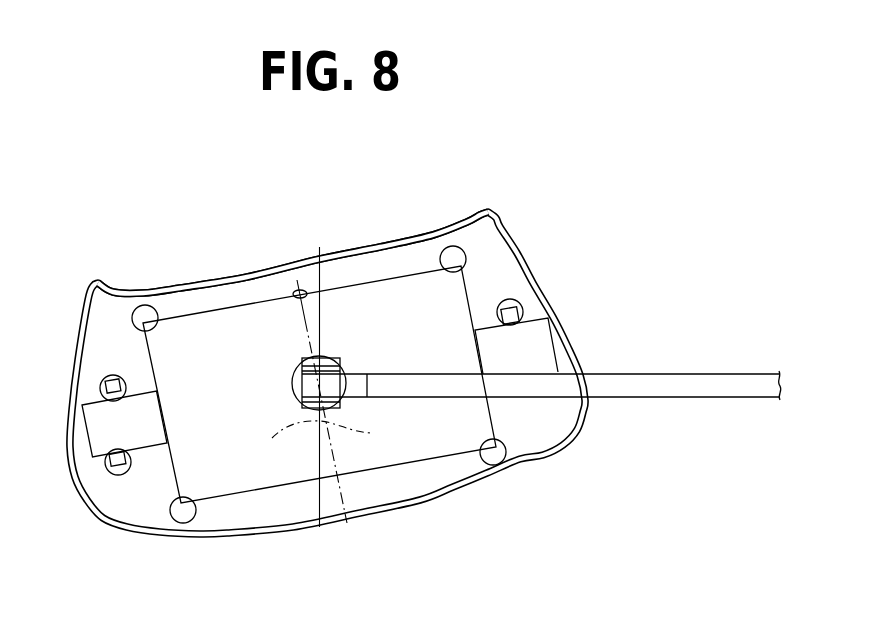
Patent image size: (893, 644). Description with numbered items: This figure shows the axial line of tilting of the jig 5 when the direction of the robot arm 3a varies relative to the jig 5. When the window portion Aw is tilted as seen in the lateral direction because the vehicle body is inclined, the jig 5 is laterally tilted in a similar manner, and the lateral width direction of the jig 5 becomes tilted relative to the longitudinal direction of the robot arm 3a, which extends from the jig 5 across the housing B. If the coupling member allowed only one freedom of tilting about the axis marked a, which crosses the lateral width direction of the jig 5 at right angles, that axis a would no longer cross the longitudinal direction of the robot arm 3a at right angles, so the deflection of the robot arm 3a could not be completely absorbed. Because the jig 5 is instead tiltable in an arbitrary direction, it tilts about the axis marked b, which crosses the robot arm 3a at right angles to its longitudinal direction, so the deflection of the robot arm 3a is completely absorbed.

The jig 5 is at (213, 328).
The window portion Aw is at (377, 256).
The base housing B is at (142, 505).
The robot arm 3a is at (707, 392).
The axial line of tilting a is at (331, 387).
The axis of tilting b is at (304, 401).